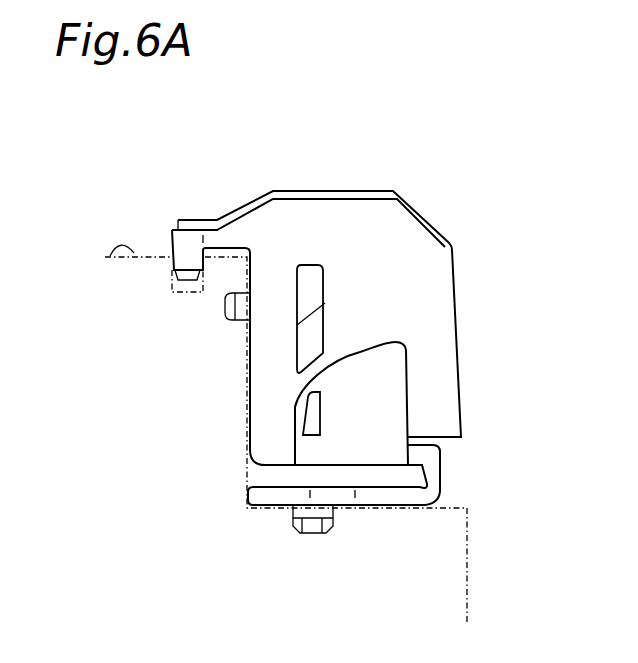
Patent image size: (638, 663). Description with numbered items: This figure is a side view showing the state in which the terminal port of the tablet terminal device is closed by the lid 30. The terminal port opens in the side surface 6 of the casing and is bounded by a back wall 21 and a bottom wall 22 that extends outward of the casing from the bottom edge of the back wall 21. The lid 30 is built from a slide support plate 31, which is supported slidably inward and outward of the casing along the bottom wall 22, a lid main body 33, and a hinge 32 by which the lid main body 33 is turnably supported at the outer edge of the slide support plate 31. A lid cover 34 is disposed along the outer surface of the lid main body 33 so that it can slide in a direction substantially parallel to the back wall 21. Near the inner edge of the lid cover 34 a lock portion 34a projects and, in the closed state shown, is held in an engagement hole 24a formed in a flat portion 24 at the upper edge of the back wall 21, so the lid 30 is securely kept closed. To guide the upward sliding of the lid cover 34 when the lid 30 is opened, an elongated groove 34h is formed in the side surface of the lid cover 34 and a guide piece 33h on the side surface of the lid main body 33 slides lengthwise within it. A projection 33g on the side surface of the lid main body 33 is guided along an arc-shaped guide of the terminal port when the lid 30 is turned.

The lid 30 is at (320, 181).
The lid cover 34 is at (455, 273).
The lock portion 34a is at (170, 250).
The elongated groove 34h is at (320, 330).
The lid main body 33 is at (397, 412).
The guide piece 33h is at (318, 283).
The projection to be guided 33g is at (322, 414).
The hinge 32 is at (428, 500).
The slide support plate 31 is at (265, 484).
The bottom wall 22 is at (368, 503).
The back wall 21 is at (262, 373).
The flat portion 24 is at (105, 259).
The engagement hole 24a is at (183, 277).
The side surface 6 is at (467, 593).